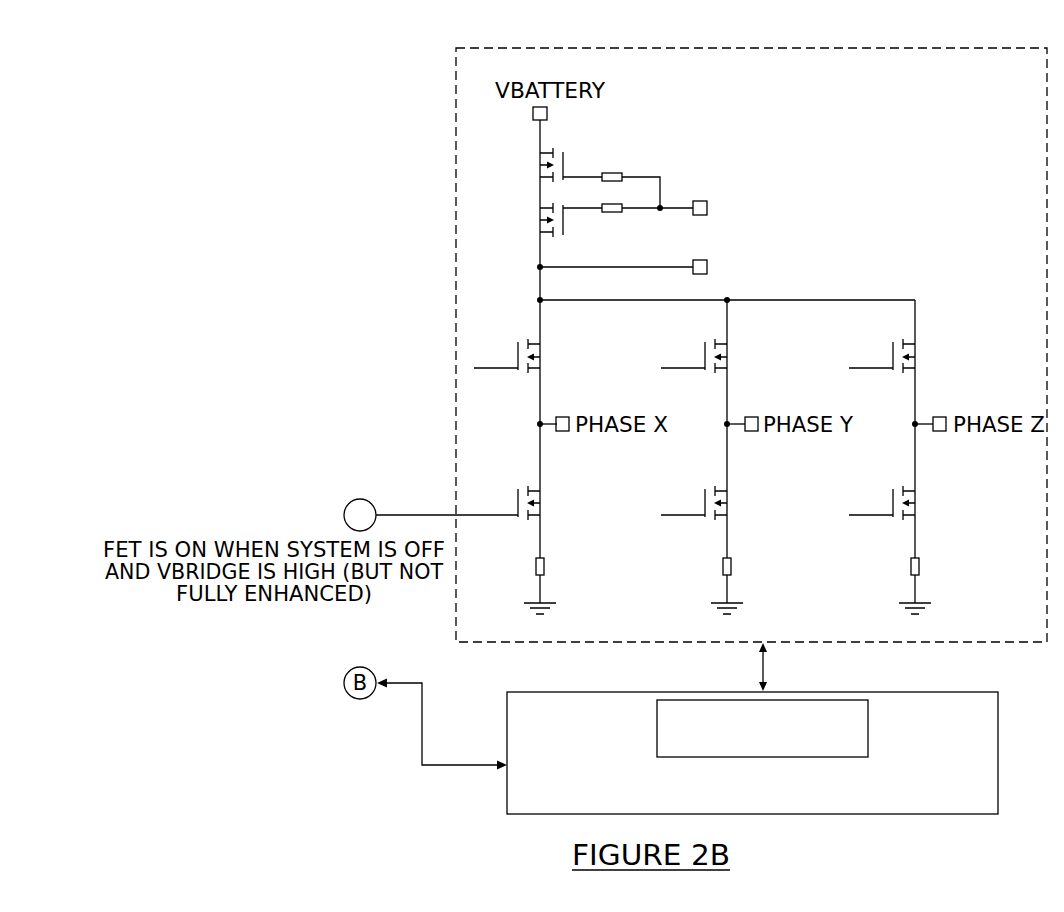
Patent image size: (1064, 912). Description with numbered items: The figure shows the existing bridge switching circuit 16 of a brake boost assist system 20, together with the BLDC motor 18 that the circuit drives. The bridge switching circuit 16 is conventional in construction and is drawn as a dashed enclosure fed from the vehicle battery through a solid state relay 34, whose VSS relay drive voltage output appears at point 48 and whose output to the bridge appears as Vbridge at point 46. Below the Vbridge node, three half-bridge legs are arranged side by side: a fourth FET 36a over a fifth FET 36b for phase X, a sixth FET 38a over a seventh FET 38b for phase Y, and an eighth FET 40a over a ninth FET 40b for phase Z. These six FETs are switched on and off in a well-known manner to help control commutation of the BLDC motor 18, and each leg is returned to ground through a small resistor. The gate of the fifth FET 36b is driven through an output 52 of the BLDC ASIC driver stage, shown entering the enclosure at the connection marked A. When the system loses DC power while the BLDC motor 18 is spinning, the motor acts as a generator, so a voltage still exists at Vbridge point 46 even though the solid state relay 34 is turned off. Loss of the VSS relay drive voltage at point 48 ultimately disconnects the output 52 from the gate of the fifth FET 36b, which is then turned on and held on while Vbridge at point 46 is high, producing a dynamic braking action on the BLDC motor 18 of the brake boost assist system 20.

The bridge switching circuit 16 is at (505, 47).
The solid state relay 34 is at (638, 162).
The VSS relay drive voltage output point 48 is at (703, 200).
The Vbridge point 46 is at (703, 259).
The fourth FET 36a is at (543, 361).
The fifth FET 36b is at (545, 511).
The sixth FET 38a is at (731, 361).
The seventh FET 38b is at (733, 511).
The eighth FET 40a is at (919, 361).
The ninth FET 40b is at (921, 511).
The output of the ASIC driver stage 52 is at (497, 512).
The brake boost assist system 20 is at (560, 691).
The BLDC motor 18 is at (655, 733).